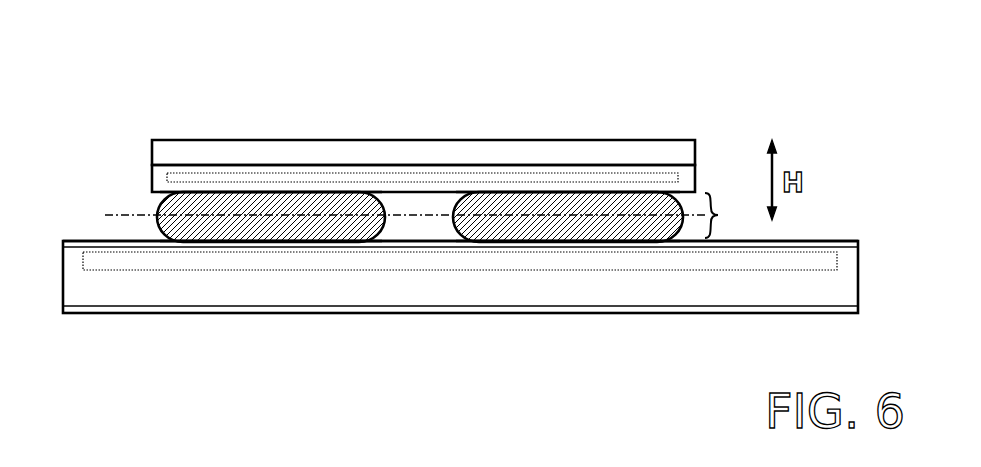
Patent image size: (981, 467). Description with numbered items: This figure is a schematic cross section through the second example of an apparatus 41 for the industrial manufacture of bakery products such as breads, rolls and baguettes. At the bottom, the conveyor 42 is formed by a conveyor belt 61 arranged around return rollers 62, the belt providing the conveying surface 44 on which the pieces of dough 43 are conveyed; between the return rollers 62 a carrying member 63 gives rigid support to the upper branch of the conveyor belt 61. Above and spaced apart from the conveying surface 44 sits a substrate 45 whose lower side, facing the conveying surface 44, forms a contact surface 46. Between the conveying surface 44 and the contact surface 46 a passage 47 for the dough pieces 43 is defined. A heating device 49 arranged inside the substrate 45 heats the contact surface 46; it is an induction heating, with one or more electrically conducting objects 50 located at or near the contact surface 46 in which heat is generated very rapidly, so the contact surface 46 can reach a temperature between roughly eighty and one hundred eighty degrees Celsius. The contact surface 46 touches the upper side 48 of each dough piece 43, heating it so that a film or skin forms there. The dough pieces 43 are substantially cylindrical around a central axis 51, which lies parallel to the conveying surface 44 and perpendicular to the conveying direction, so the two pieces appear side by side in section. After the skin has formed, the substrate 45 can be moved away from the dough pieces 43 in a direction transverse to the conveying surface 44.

The apparatus 41 is at (95, 84).
The conveyor 42 is at (696, 325).
The piece of dough 43 is at (378, 190).
The conveying surface 44 is at (837, 240).
The substrate 45 is at (660, 165).
The contact surface 46 is at (153, 198).
The passage 47 is at (731, 215).
The upper side 48 is at (285, 192).
The heating device 49 is at (228, 152).
The electrically conducting objects 50 is at (372, 181).
The central axis 51 is at (307, 220).
The conveyor belt 61 is at (122, 243).
The return rollers 62 is at (213, 282).
The carrying member 63 is at (427, 262).